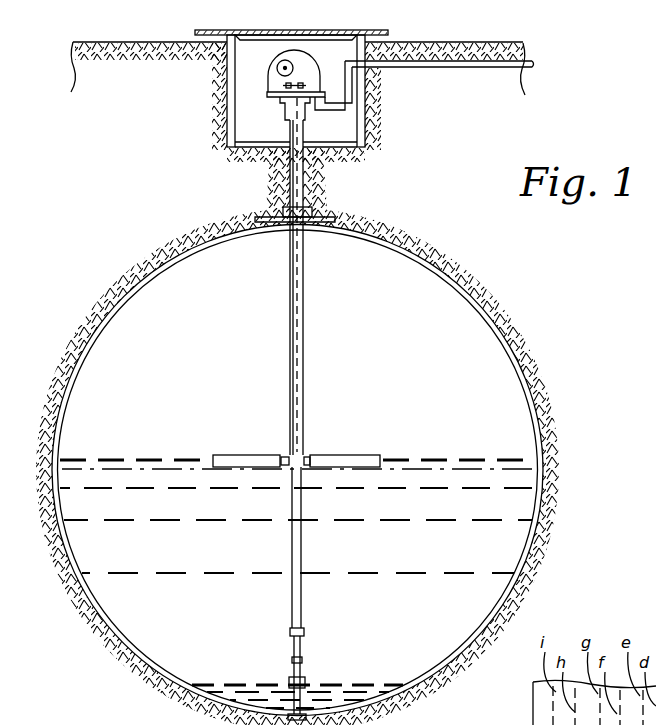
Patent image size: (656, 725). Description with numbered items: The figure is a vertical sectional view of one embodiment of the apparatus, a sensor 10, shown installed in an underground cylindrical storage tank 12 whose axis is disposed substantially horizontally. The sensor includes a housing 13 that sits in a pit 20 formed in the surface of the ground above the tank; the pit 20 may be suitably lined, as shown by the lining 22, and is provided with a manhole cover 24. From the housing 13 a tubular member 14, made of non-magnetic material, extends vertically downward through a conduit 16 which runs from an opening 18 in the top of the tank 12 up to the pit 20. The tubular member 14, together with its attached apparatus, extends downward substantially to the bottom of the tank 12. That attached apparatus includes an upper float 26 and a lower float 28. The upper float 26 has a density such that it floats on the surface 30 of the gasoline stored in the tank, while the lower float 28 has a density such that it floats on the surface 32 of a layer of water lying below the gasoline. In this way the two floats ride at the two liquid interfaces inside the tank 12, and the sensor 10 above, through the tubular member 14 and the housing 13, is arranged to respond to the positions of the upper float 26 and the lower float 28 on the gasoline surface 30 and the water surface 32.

The sensor 10 is at (268, 63).
The underground cylindrical storage tank 12 is at (525, 372).
The housing 13 is at (268, 64).
The tubular member 14 is at (290, 300).
The conduit 16 is at (308, 172).
The opening 18 is at (300, 206).
The pit 20 is at (252, 142).
The lining 22 is at (227, 98).
The manhole cover 24 is at (255, 31).
The upper float 26 is at (243, 455).
The lower float 28 is at (290, 680).
The surface of the gasoline 30 is at (124, 458).
The surface of the water layer 32 is at (343, 683).